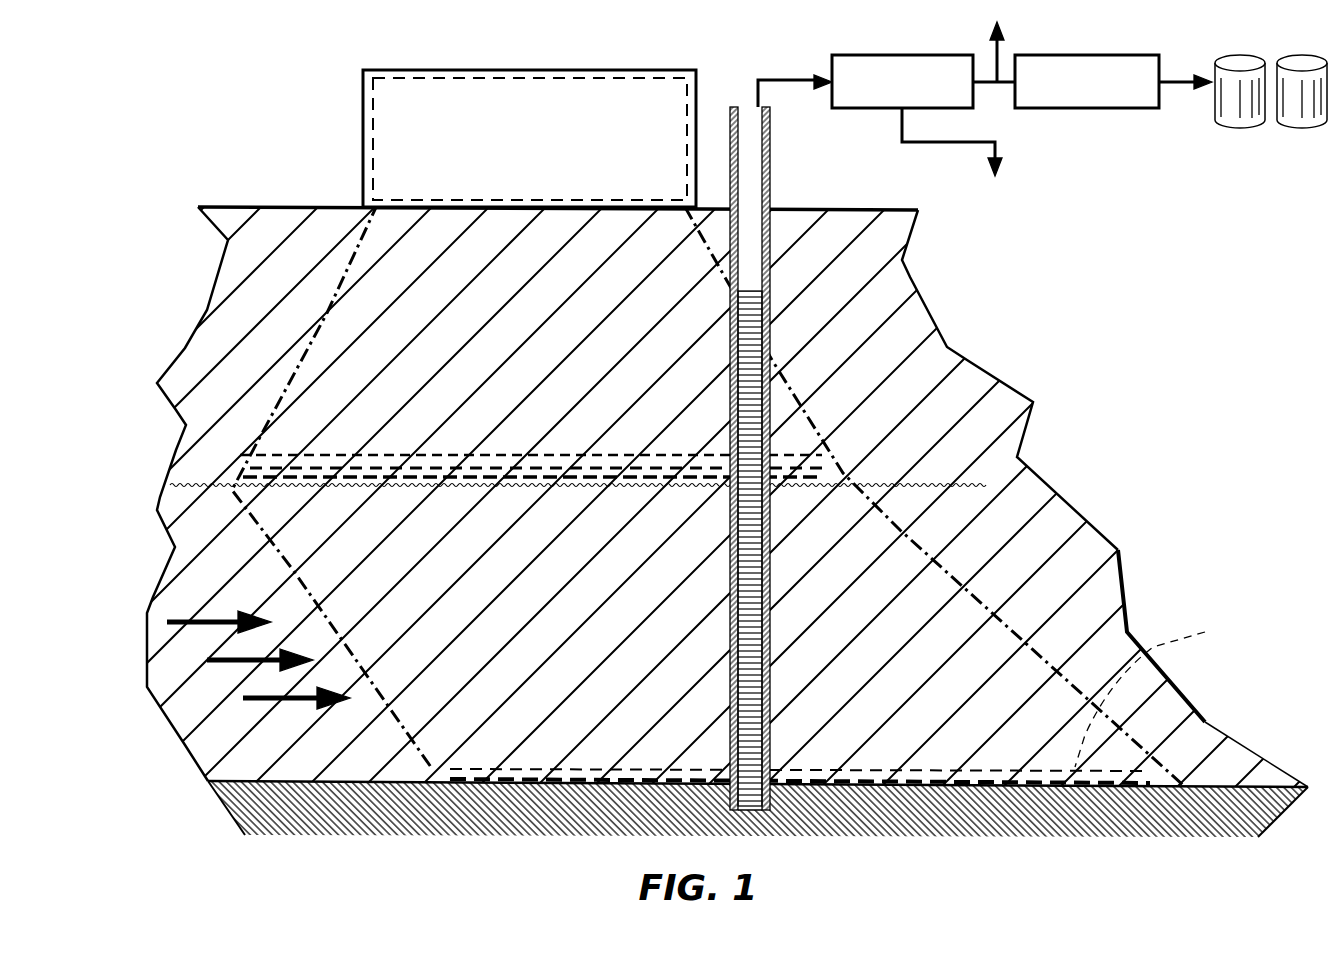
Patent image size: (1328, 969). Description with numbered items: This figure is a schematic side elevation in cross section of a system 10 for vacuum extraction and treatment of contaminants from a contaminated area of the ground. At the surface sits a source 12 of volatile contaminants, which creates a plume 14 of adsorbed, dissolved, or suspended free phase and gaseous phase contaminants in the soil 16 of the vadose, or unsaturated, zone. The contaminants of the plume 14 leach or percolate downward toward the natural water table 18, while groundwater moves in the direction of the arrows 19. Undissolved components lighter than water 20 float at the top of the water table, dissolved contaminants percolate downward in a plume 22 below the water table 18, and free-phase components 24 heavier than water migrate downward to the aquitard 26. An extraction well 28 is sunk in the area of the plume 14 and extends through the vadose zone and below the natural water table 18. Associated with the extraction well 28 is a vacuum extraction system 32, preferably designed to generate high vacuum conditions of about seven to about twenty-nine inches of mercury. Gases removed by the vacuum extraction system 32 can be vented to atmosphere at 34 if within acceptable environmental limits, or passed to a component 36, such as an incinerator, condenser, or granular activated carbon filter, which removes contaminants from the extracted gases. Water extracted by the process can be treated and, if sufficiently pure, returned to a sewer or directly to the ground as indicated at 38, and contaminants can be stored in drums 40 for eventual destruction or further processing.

The system 10 is at (335, 165).
The source 12 is at (482, 92).
The plume 14 is at (372, 349).
The soil 16 is at (975, 370).
The natural water table 18 is at (1015, 457).
The arrows 19 is at (262, 698).
The components lighter than water 20 is at (302, 450).
The plume 22 is at (912, 615).
The free-phase components heavier than water 24 is at (1156, 692).
The aquitard 26 is at (1228, 813).
The extraction well 28 is at (790, 333).
The vacuum extraction system 32 is at (883, 55).
The vent to atmosphere 34 is at (998, 52).
The component 36 is at (1105, 55).
The return of treated water 38 is at (1000, 143).
The drums 40 is at (1308, 107).